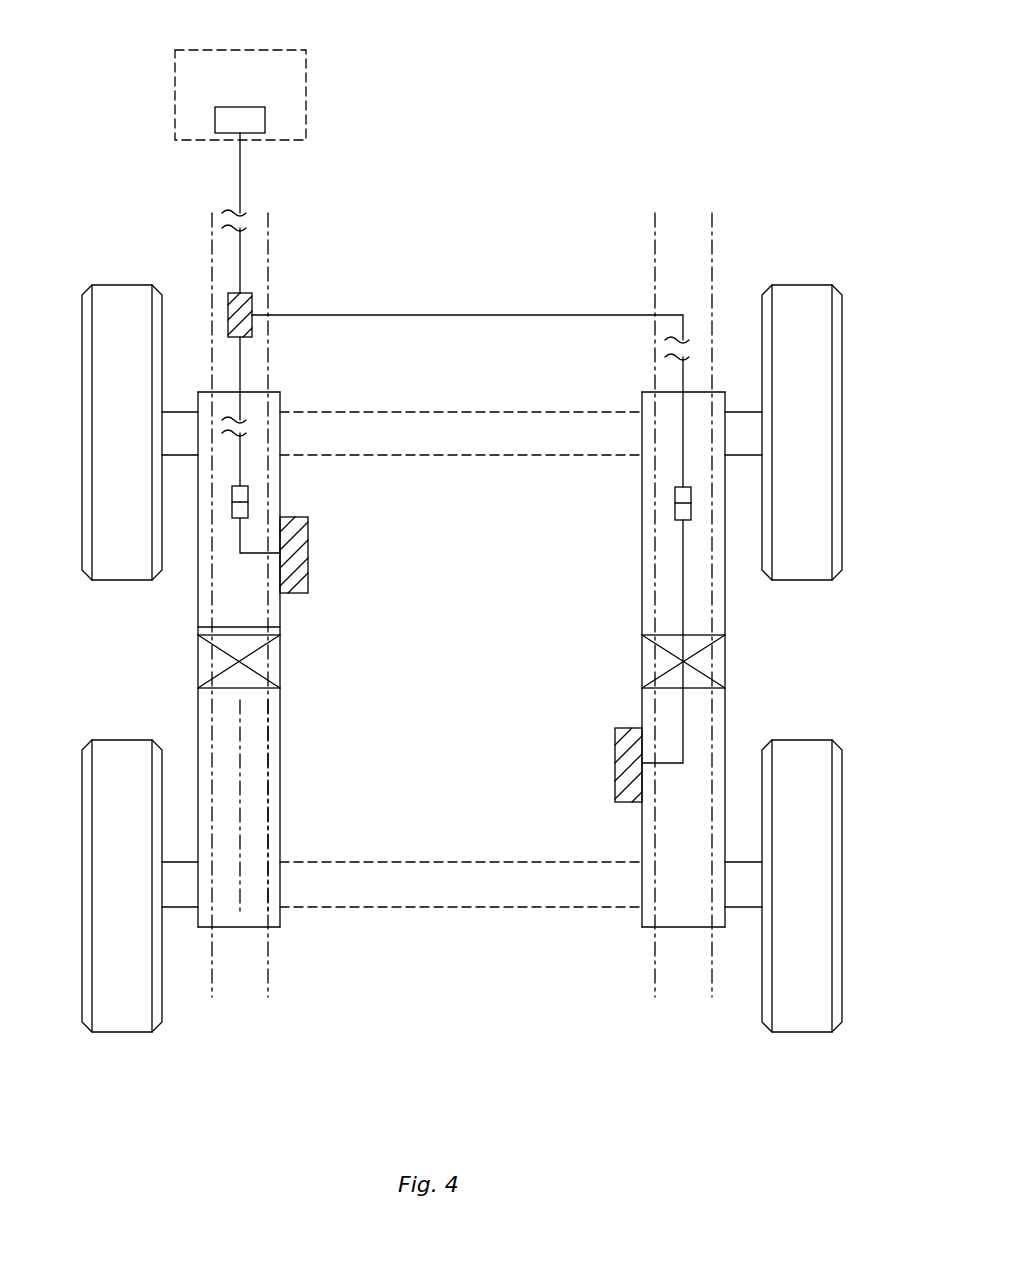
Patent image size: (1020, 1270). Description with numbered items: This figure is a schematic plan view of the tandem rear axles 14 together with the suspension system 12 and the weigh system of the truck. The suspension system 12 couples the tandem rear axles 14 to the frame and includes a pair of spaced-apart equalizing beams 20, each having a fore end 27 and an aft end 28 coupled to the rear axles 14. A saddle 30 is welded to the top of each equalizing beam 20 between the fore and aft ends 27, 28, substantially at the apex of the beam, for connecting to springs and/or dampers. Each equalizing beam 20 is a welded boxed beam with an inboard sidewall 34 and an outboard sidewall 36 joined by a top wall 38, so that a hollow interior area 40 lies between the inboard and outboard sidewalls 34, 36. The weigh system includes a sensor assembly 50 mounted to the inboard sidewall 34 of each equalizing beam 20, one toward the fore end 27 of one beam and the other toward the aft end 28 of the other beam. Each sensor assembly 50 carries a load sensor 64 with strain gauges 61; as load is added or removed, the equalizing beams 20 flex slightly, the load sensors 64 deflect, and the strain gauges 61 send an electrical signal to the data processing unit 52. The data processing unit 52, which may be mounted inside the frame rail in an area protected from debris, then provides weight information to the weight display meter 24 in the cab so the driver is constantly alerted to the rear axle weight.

The suspension system 12 is at (728, 270).
The tandem rear axles 14 is at (452, 412).
The equalizing beams 20 is at (198, 612).
The weight display meter 24 is at (306, 82).
The fore end 27 is at (258, 470).
The aft end 28 is at (232, 880).
The saddle 30 is at (280, 662).
The inboard sidewall 34 is at (280, 730).
The outboard sidewall 36 is at (198, 722).
The top wall 38 is at (262, 786).
The hollow interior area 40 is at (258, 840).
The sensor assembly 50 is at (461, 674).
The data processing unit 52 is at (258, 337).
The strain gauges 61 is at (306, 560).
The load sensor 64 is at (312, 597).